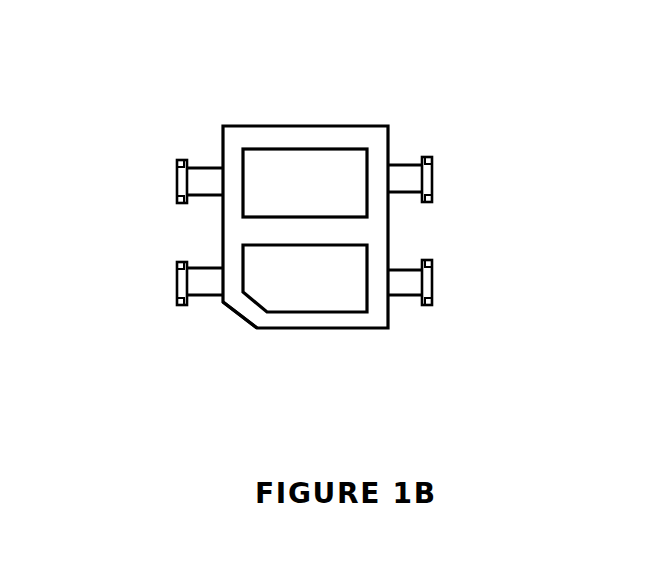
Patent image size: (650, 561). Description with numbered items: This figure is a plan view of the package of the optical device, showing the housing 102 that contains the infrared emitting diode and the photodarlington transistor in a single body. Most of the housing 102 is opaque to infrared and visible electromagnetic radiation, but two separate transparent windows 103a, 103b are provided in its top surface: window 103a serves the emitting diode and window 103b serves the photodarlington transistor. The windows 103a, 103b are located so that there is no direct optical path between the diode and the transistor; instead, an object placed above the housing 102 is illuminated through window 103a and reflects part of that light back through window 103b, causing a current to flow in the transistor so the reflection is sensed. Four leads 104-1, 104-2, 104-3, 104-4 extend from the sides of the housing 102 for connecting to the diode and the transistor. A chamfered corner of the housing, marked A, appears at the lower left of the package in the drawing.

The housing 102 is at (448, 398).
The window 103a is at (350, 306).
The window 103b is at (353, 161).
The lead 104-1 is at (197, 278).
The lead 104-2 is at (423, 275).
The lead 104-3 is at (413, 170).
The lead 104-4 is at (198, 177).
The chamfered corner / orientation feature A is at (237, 312).